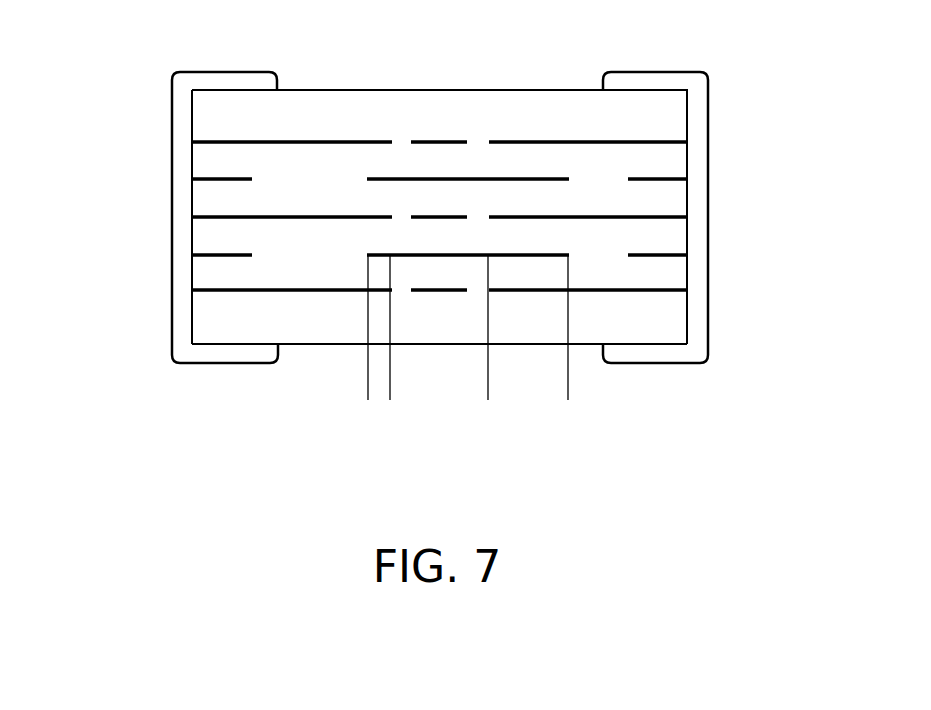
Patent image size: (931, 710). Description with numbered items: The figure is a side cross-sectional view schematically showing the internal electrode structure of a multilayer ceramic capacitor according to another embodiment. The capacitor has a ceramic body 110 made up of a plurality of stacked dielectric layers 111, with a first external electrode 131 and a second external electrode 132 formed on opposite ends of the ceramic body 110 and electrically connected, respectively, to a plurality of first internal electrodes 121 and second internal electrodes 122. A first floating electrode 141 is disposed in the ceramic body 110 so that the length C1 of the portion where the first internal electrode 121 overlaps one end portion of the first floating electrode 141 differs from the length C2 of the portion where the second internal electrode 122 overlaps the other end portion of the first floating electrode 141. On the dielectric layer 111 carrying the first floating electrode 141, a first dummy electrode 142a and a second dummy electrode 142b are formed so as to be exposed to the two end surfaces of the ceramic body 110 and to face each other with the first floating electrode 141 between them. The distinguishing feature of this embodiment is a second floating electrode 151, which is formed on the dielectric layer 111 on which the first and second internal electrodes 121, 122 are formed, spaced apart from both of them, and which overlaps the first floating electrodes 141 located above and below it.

The ceramic body 110 is at (533, 85).
The dielectric layer 111 is at (670, 239).
The first internal electrode 121 is at (238, 142).
The second internal electrode 122 is at (628, 142).
The first external electrode 131 is at (182, 220).
The second external electrode 132 is at (697, 182).
The first floating electrode 141 is at (445, 257).
The first dummy electrode 142a is at (225, 257).
The second dummy electrode 142b is at (658, 257).
The second floating electrode 151 is at (435, 142).
The length of overlapped portion between first internal electrode and first floating C1 is at (440, 392).
The length of overlapped portion between second internal electrode and first floatin C2 is at (488, 392).